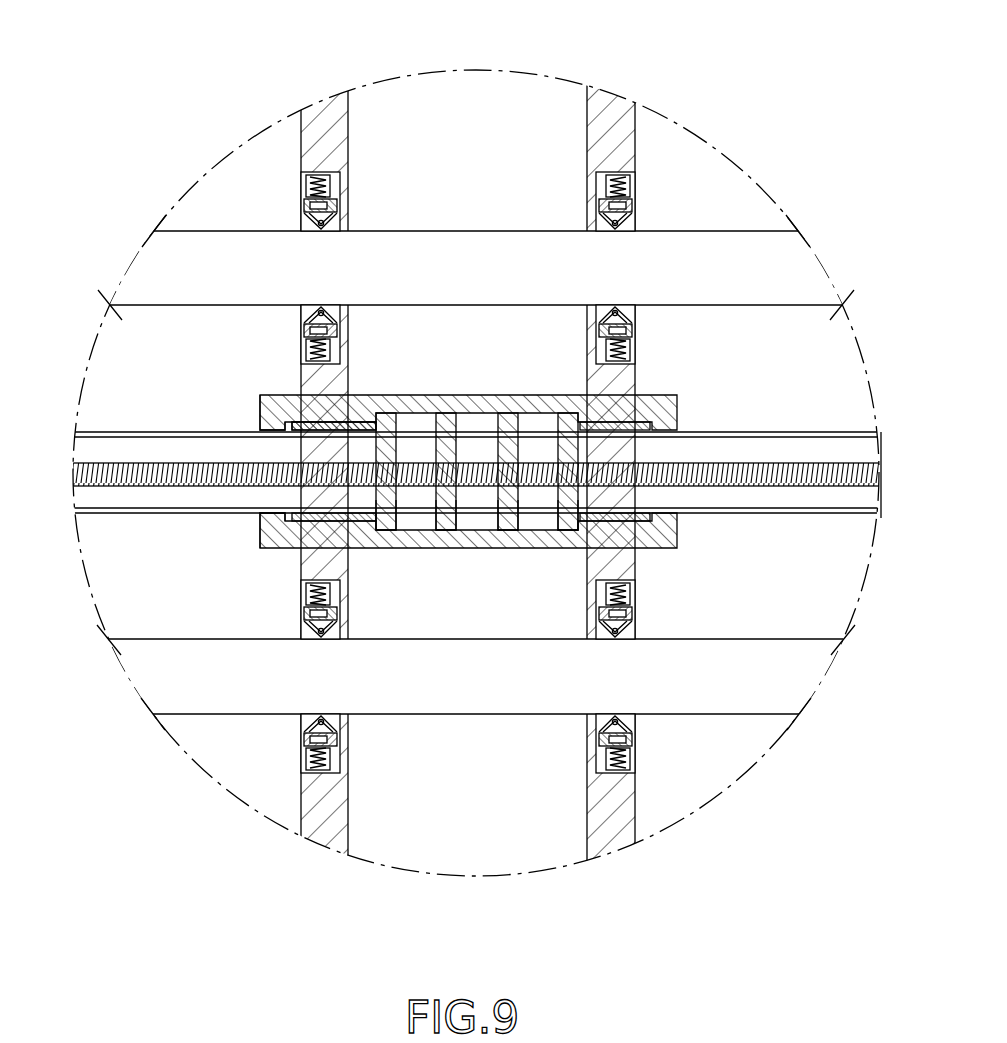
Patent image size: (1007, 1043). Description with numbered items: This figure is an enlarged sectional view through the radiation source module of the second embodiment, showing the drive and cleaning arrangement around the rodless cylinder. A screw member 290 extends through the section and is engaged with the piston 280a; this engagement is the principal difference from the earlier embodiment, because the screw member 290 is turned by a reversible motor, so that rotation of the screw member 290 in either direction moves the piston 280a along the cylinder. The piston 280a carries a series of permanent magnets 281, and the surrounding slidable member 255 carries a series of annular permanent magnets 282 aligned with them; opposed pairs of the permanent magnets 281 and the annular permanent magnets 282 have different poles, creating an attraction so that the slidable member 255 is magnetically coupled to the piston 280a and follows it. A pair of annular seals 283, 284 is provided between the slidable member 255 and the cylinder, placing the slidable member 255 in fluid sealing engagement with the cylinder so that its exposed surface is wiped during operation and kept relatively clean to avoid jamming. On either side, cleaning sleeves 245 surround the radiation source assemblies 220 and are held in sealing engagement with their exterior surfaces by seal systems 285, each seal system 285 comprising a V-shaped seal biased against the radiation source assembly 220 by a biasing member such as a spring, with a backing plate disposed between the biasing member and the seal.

The radiation source assembly 220 is at (750, 233).
The cleaning sleeve 245 is at (321, 108).
The slidable member 255 is at (464, 400).
The piston 280a is at (415, 498).
The permanent magnets 281 is at (447, 412).
The annular permanent magnets 282 is at (440, 530).
The annular seal 283 is at (285, 423).
The annular seal 284 is at (675, 432).
The seal system 285 is at (292, 210).
The screw member 290 is at (143, 478).